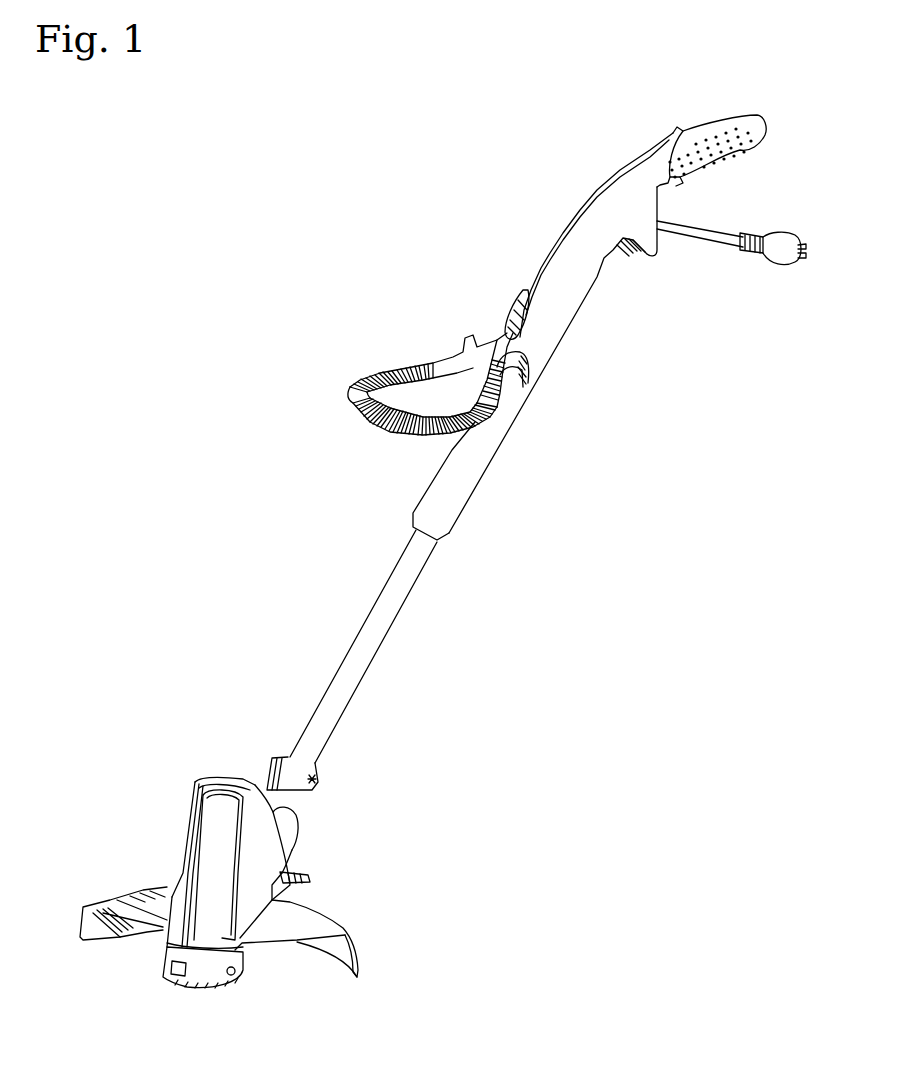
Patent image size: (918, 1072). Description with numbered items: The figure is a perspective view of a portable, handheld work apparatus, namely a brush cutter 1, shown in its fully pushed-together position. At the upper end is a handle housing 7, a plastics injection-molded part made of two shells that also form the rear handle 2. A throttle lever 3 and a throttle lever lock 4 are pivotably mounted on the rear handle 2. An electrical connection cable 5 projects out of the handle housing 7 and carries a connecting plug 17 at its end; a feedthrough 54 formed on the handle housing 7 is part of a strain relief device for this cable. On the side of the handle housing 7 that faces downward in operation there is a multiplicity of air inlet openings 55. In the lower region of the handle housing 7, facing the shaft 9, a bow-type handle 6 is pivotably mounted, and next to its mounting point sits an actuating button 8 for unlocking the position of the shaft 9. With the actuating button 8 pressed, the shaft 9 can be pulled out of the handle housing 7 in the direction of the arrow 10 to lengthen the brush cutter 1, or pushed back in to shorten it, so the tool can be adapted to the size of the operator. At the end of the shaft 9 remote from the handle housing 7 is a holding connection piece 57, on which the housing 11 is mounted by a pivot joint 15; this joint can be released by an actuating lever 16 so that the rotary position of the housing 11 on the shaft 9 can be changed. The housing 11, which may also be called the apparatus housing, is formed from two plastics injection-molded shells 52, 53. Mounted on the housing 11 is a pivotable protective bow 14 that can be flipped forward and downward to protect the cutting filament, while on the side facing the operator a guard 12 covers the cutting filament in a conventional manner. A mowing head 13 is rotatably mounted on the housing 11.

The brush cutter 1 is at (202, 230).
The rear handle 2 is at (722, 133).
The throttle lever 3 is at (683, 180).
The throttle lever lock 4 is at (673, 130).
The electrical connection cable 5 is at (722, 240).
The bow-type handle 6 is at (350, 389).
The handle housing 7 is at (577, 283).
The actuating button 8 is at (515, 313).
The shaft 9 is at (352, 655).
The arrow 10 is at (505, 543).
The housing 11 is at (174, 873).
The guard 12 is at (318, 926).
The mowing head 13 is at (158, 985).
The protective bow 14 is at (195, 788).
The pivot joint 15 is at (297, 829).
The actuating lever 16 is at (310, 870).
The connecting plug 17 is at (786, 255).
The shell 52 is at (168, 932).
The shell 53 is at (203, 937).
The feedthrough 54 is at (647, 250).
The air inlet openings 55 is at (570, 335).
The holding connection piece 57 is at (270, 767).